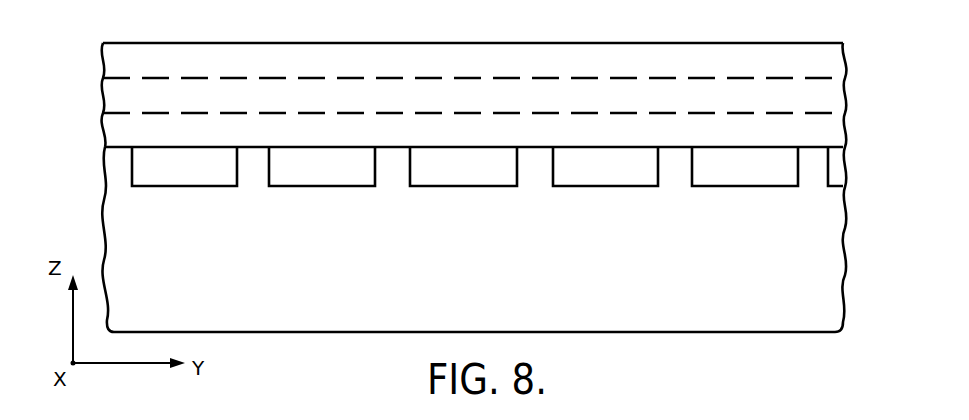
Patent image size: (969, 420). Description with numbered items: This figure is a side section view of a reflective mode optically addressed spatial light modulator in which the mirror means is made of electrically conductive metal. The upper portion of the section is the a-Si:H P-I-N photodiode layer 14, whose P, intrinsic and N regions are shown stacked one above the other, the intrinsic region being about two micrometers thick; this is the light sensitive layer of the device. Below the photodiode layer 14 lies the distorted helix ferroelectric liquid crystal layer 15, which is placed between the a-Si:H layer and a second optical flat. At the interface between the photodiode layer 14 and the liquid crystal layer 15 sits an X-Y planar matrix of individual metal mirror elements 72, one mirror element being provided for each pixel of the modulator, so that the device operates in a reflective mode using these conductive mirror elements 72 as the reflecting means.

The photodiode layer 14 is at (859, 43).
The ferroelectric liquid crystal layer 15 is at (859, 187).
The metal mirror elements 72 is at (589, 187).